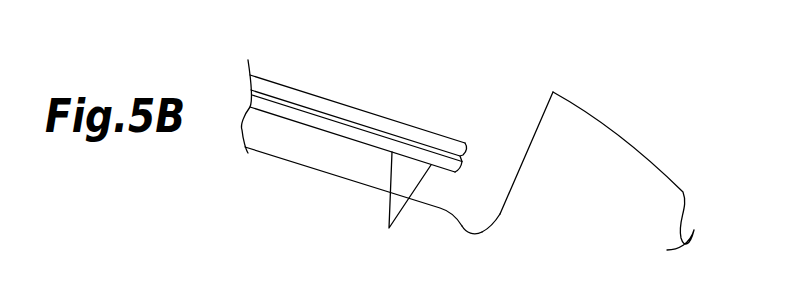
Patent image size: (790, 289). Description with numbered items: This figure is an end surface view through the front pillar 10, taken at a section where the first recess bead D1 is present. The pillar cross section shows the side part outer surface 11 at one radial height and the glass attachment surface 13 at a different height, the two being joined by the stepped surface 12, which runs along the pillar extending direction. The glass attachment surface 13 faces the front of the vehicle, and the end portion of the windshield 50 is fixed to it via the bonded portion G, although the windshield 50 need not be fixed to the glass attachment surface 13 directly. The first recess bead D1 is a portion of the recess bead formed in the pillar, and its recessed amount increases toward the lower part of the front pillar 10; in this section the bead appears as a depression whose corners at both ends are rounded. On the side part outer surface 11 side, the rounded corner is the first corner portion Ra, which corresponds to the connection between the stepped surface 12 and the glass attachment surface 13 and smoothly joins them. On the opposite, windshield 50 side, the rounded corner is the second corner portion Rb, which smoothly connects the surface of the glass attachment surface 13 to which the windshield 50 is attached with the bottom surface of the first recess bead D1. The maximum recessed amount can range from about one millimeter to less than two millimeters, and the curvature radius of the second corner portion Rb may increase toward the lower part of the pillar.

The front pillar 10 is at (597, 133).
The side part outer surface 11 is at (640, 152).
The stepped surface 12 is at (540, 122).
The glass attachment surface 13 is at (333, 172).
The windshield 50 is at (322, 76).
The bonded portion G is at (397, 180).
The first recess bead D1 is at (466, 229).
The first corner portion Ra is at (491, 236).
The second corner portion Rb is at (441, 222).